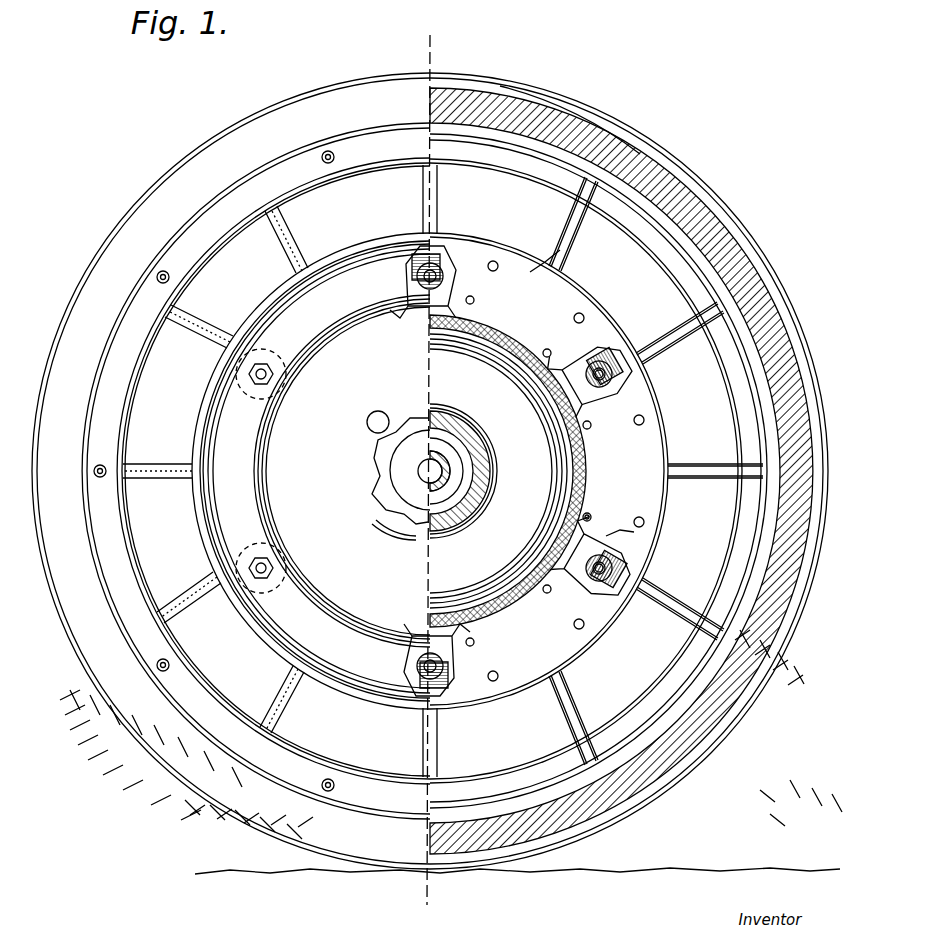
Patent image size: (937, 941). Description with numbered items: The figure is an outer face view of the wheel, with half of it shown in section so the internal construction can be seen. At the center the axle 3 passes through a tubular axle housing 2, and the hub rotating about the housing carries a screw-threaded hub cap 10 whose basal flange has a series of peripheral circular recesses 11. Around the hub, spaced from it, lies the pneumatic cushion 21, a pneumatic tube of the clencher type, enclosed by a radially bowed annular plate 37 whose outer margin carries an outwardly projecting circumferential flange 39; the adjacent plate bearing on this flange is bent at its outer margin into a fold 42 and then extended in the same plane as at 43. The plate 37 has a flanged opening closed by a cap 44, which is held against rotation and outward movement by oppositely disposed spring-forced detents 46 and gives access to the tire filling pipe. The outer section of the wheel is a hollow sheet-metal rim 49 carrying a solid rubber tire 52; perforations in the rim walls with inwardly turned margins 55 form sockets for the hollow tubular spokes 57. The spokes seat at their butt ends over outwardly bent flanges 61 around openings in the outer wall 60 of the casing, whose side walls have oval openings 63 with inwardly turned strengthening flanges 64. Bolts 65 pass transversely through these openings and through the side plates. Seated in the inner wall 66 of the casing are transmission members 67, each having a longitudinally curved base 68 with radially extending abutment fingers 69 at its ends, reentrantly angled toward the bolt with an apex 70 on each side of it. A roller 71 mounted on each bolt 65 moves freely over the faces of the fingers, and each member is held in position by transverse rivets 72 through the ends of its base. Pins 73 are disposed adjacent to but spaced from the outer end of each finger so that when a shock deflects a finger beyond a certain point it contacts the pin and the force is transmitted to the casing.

The tubular axle housing 2 is at (452, 452).
The axle 3 is at (276, 288).
The hub cap 10 is at (441, 471).
The peripheral circular recesses 11 is at (420, 414).
The pneumatic cushion 21 is at (456, 498).
The annular plate 37 is at (342, 471).
The circumferential flange 39 is at (298, 322).
The fold 42 is at (268, 322).
The extended portion of plate 43 is at (296, 262).
The cap 44 is at (408, 452).
The detents 46 is at (342, 276).
The rim 49 is at (660, 745).
The tire 52 is at (620, 150).
The inwardly turned perforation margins 55 is at (720, 302).
The spokes 57 is at (580, 246).
The outer wall of casing 60 is at (568, 622).
The outwardly bent flange 61 is at (546, 252).
The openings 63 is at (236, 388).
The inwardly turned flange 64 is at (630, 381).
The bolts 65 is at (462, 246).
The inner wall of casing 66 is at (504, 326).
The transmission member 67 is at (447, 344).
The base 68 is at (548, 408).
The abutment fingers 69 is at (567, 349).
The apex 70 is at (612, 532).
The roller 71 is at (604, 362).
The rivets 72 is at (590, 514).
The pins 73 is at (586, 318).